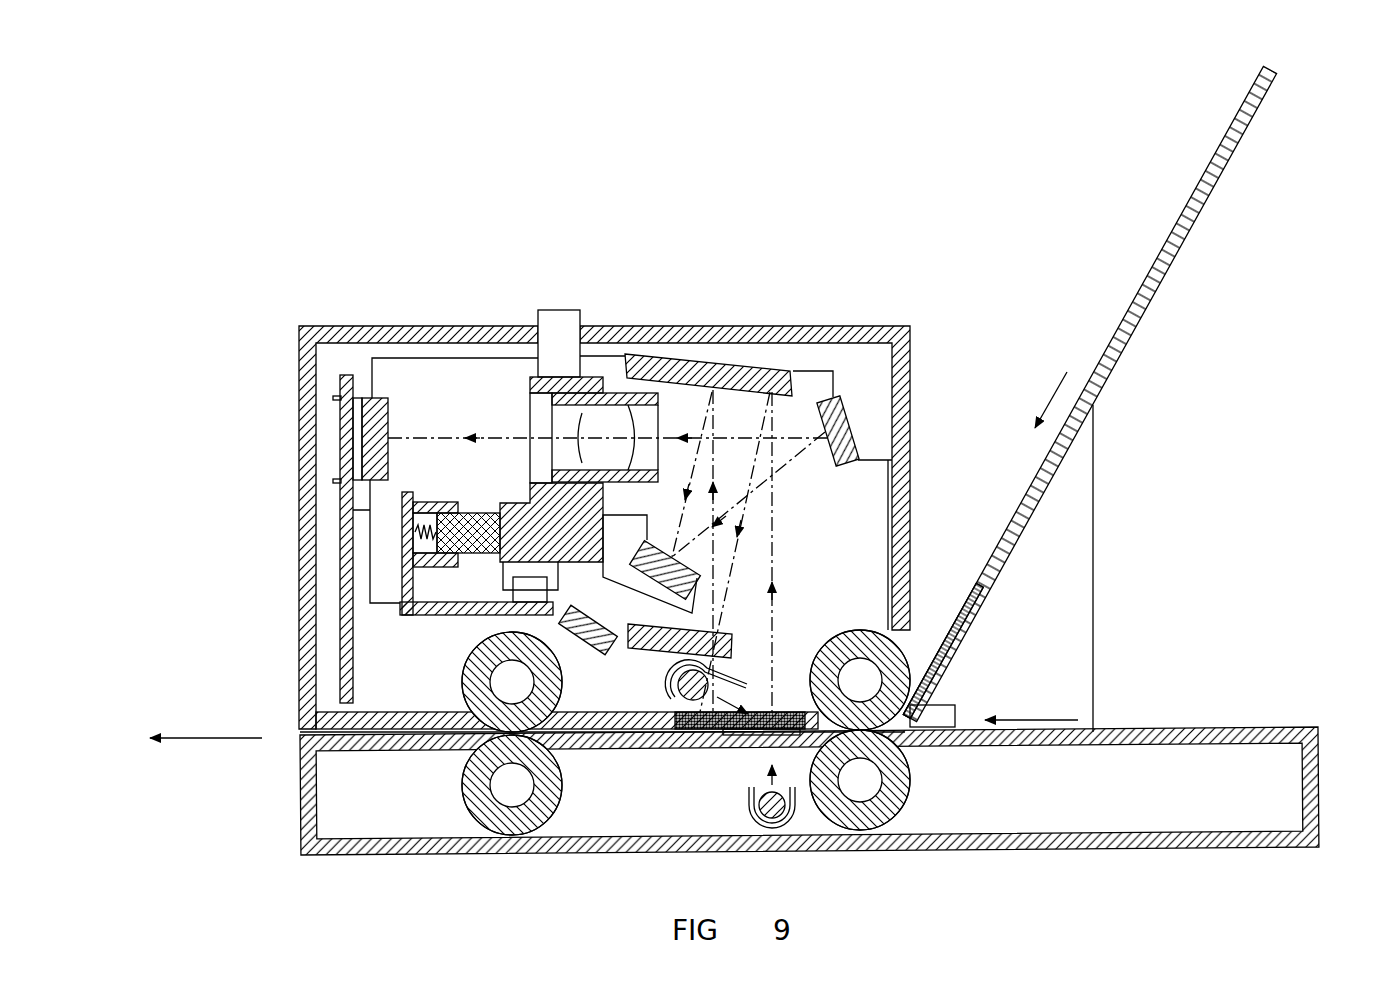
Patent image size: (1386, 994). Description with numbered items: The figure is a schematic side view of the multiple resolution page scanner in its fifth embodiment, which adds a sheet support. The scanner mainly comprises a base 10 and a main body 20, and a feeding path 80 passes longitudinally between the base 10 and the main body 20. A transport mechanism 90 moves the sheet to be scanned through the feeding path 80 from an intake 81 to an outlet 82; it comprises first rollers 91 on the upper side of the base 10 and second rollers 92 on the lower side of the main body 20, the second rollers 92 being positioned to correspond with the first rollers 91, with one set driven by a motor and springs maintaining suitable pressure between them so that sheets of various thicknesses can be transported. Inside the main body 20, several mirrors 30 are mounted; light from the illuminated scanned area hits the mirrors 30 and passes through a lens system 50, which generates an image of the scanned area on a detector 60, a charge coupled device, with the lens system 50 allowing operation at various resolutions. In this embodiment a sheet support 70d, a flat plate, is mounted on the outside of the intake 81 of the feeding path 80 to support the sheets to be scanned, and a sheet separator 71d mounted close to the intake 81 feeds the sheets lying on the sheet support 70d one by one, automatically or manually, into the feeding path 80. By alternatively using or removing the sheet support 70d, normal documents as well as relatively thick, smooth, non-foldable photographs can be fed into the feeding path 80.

The base 10 is at (1330, 770).
The main body 20 is at (282, 555).
The mirrors 30 is at (858, 400).
The lens system 50 is at (522, 413).
The detector 60 is at (362, 427).
The sheet support 70d is at (1077, 427).
The sheet separator 71d is at (975, 620).
The feeding path 80 is at (411, 736).
The intake 81 is at (910, 727).
The outlet 82 is at (303, 733).
The transport mechanism 90 is at (741, 730).
The first rollers 91 is at (483, 812).
The second rollers 92 is at (480, 700).